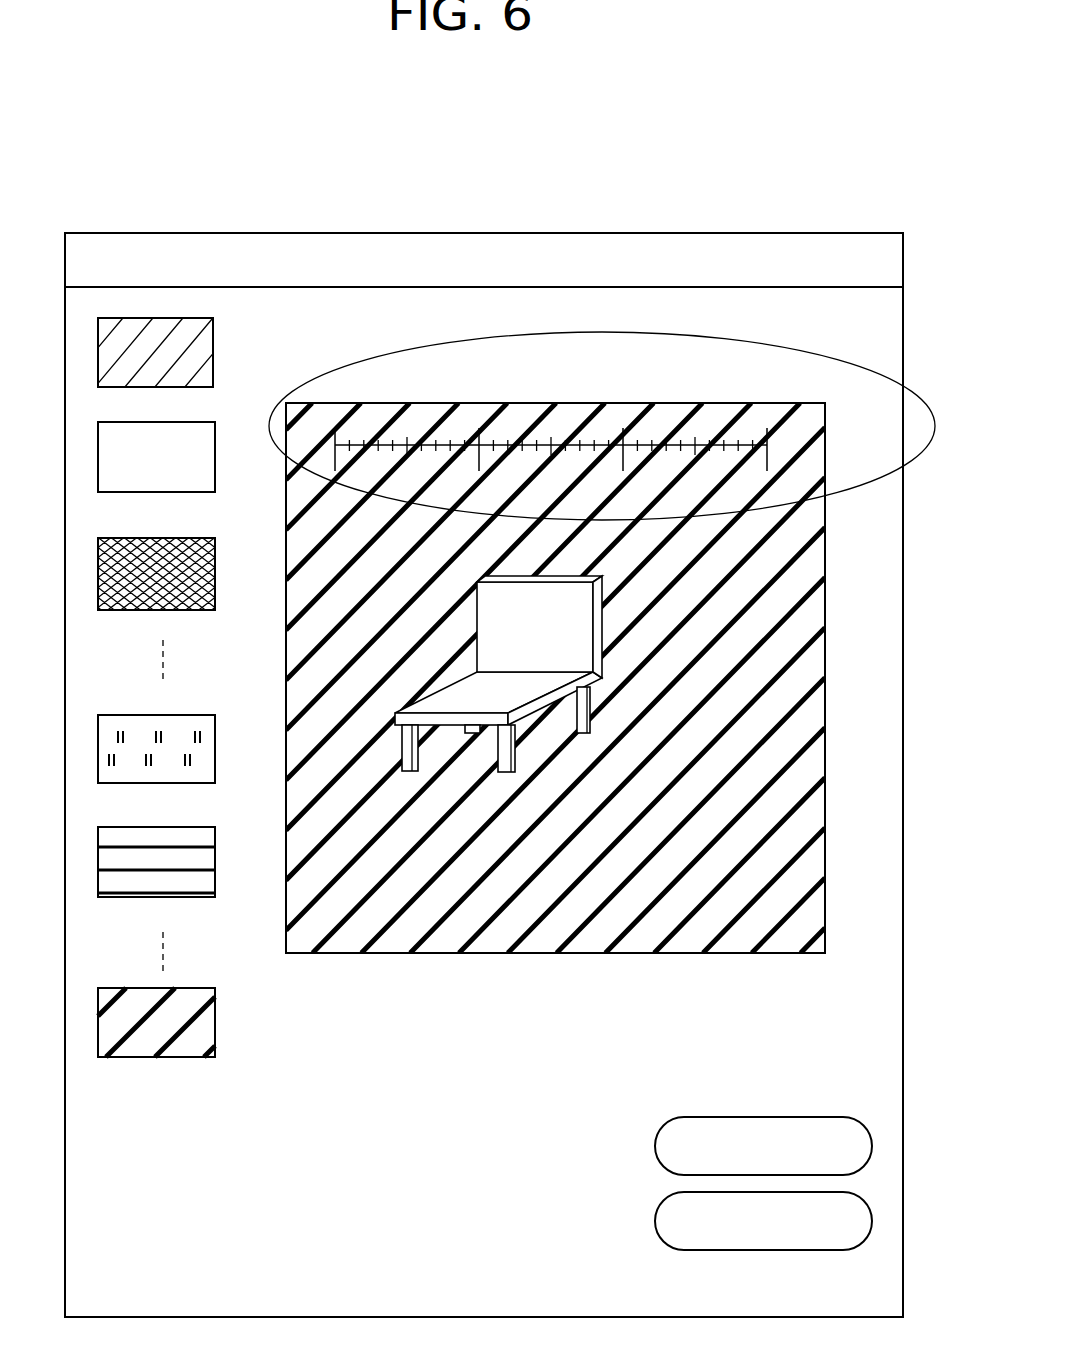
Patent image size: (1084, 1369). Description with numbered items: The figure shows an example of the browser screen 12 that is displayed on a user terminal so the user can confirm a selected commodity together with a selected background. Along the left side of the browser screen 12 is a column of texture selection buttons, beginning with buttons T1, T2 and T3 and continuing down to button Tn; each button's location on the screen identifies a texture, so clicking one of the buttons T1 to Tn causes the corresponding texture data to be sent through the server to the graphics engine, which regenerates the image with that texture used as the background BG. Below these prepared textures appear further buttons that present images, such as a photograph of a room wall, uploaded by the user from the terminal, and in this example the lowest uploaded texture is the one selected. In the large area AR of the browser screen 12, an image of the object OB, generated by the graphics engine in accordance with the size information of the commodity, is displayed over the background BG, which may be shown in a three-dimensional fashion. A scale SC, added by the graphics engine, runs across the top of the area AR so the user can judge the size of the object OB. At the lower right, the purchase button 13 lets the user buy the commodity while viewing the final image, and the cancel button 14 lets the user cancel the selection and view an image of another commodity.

The browser screen 12 is at (360, 233).
The texture selection button T1 is at (193, 318).
The texture selection button T2 is at (193, 422).
The texture selection button T3 is at (190, 538).
The texture selection button Tn is at (185, 715).
The background BG is at (487, 533).
The scale SC is at (702, 390).
The object OB is at (568, 618).
The area AR is at (395, 937).
The purchase button 13 is at (712, 1251).
The cancel button 14 is at (823, 1116).